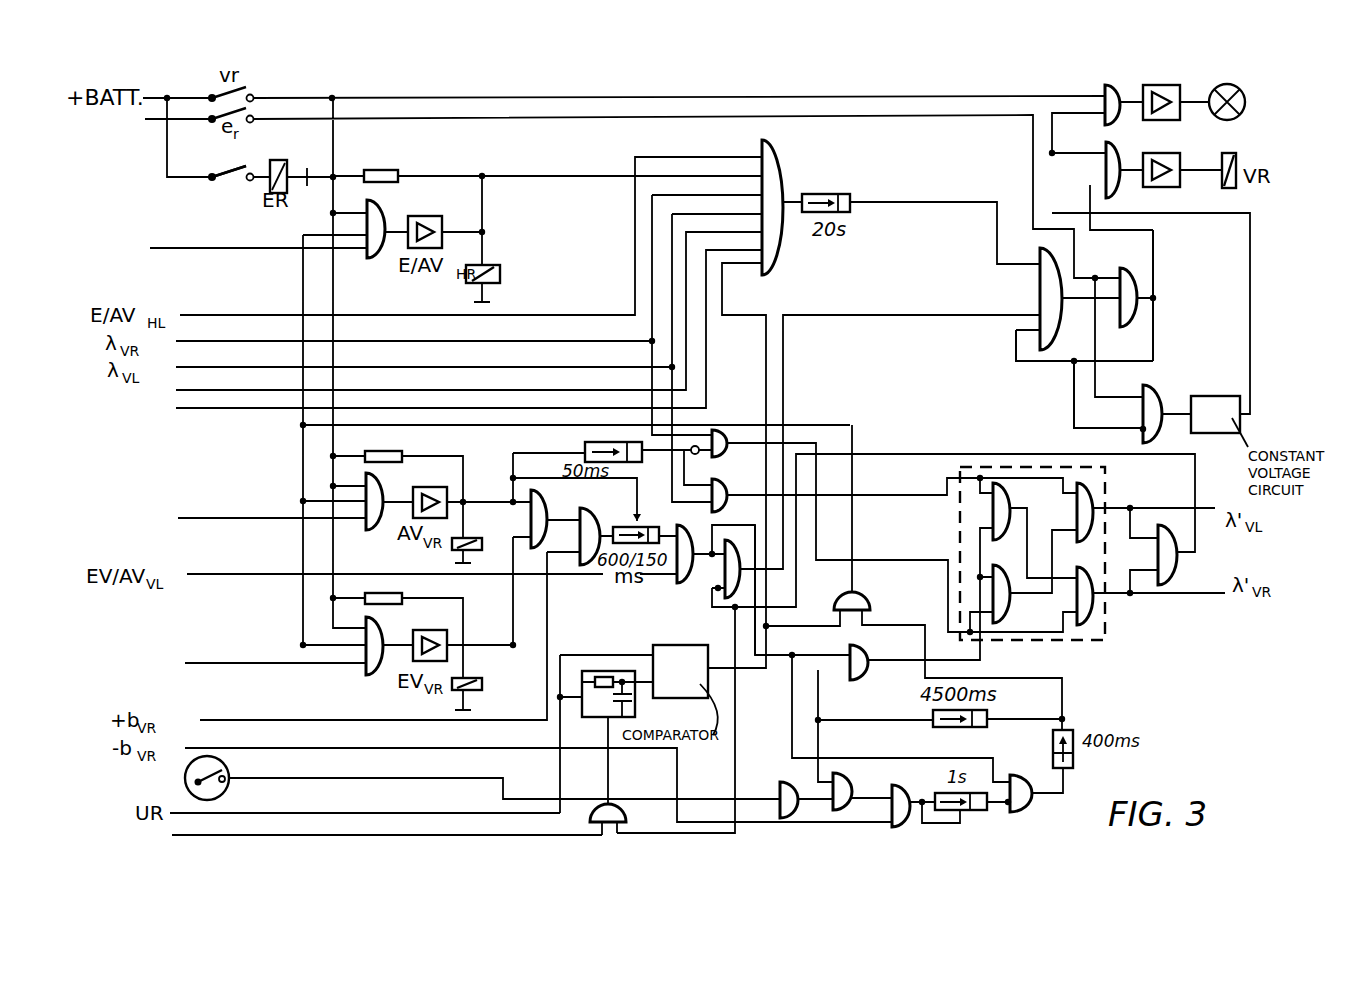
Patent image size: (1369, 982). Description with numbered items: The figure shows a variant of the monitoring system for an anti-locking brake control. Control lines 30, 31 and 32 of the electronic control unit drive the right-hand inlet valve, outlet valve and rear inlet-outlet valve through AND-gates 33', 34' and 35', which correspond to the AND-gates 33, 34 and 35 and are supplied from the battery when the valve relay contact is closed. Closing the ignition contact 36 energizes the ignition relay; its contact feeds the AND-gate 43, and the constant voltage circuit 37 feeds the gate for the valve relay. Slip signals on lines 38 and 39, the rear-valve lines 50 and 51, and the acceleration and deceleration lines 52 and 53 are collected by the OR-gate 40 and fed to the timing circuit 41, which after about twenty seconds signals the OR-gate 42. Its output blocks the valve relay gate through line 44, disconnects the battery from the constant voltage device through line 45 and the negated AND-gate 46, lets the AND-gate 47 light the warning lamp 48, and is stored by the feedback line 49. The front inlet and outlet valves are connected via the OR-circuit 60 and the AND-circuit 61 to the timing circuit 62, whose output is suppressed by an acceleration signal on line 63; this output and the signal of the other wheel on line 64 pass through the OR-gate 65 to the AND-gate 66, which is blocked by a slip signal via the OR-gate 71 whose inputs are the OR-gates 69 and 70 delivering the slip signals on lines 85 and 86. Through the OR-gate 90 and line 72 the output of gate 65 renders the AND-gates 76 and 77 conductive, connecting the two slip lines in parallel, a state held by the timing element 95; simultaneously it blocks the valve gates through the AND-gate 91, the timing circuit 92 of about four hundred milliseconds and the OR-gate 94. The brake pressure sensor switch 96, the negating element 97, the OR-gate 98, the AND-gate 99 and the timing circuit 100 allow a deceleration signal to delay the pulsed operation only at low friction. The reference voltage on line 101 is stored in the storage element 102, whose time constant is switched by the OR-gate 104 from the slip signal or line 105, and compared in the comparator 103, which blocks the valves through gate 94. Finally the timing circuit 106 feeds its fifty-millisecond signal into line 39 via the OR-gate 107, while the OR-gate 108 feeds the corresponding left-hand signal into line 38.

The control line 30 is at (226, 661).
The control line 31 is at (233, 518).
The control line 32 is at (206, 250).
The AND-gate 33' is at (354, 658).
The AND-gate 34' is at (366, 518).
The AND-gate 35' is at (398, 220).
The AND-gate 33 is at (354, 658).
The AND-gate 34 is at (366, 518).
The AND-gate 35 is at (398, 220).
The ignition switch contact 36 is at (228, 178).
The constant voltage circuit 37 is at (1210, 395).
The slip signal line 38 is at (222, 340).
The slip signal line 39 is at (213, 367).
The OR-gate 40 is at (785, 170).
The timing circuit 41 is at (837, 192).
The OR-gate 42 is at (1040, 293).
The AND-gate 43 is at (1137, 284).
The line 44 is at (1155, 242).
The line 45 is at (1073, 412).
The AND-gate 46 is at (1160, 393).
The AND-gate 47 is at (1105, 119).
The warning lamp 48 is at (1237, 114).
The feedback line 49 is at (1038, 363).
The line 50 is at (558, 170).
The line 51 is at (275, 315).
The line 52 is at (252, 390).
The line 53 is at (285, 408).
The OR-circuit 60 is at (530, 517).
The AND-circuit 61 is at (598, 514).
The timing circuit 62 is at (643, 527).
The line 63 is at (240, 720).
The line 64 is at (232, 573).
The OR-gate 65 is at (676, 580).
The AND-gate 66 is at (725, 568).
The OR-gate 69 is at (1087, 503).
The OR-gate 70 is at (1090, 600).
The OR-gate 71 is at (1168, 557).
The line 72 is at (757, 635).
The AND-gate 76 is at (1003, 499).
The AND-gate 77 is at (1002, 604).
The line 85 is at (1212, 505).
The line 86 is at (1197, 597).
The OR-gate 90 is at (868, 667).
The AND-gate 91 is at (1020, 775).
The timing circuit 92 is at (1073, 760).
The OR-gate 94 is at (869, 597).
The timing element 95 is at (933, 726).
The brake pressure sensor switch 96 is at (224, 767).
The negating element 97 is at (780, 786).
The OR-gate 98 is at (847, 776).
The AND-gate 99 is at (912, 783).
The timing circuit 100 is at (965, 810).
The line 101 is at (368, 815).
The storage element 102 is at (637, 708).
The comparator circuit 103 is at (672, 643).
The OR-gate 104 is at (625, 812).
The line 105 is at (296, 833).
The timing circuit 106 is at (586, 447).
The OR-gate 107 is at (740, 486).
The OR-gate 108 is at (723, 427).